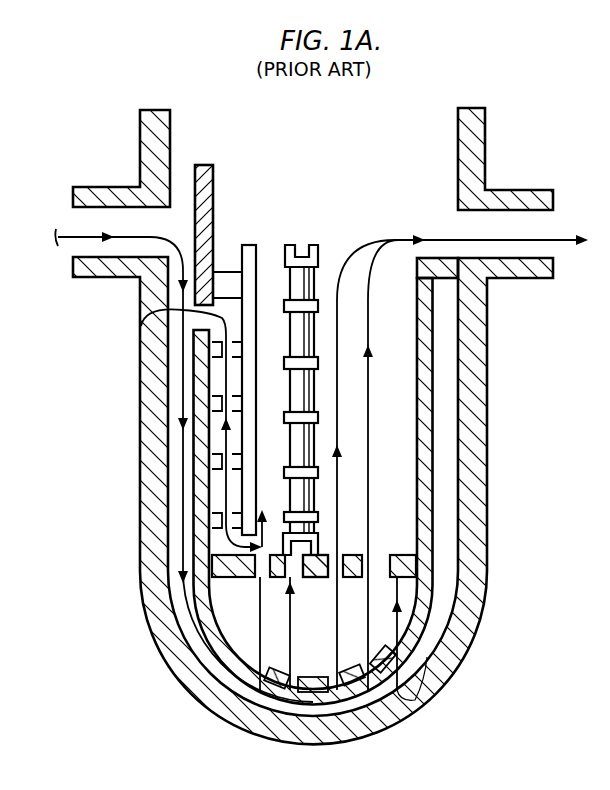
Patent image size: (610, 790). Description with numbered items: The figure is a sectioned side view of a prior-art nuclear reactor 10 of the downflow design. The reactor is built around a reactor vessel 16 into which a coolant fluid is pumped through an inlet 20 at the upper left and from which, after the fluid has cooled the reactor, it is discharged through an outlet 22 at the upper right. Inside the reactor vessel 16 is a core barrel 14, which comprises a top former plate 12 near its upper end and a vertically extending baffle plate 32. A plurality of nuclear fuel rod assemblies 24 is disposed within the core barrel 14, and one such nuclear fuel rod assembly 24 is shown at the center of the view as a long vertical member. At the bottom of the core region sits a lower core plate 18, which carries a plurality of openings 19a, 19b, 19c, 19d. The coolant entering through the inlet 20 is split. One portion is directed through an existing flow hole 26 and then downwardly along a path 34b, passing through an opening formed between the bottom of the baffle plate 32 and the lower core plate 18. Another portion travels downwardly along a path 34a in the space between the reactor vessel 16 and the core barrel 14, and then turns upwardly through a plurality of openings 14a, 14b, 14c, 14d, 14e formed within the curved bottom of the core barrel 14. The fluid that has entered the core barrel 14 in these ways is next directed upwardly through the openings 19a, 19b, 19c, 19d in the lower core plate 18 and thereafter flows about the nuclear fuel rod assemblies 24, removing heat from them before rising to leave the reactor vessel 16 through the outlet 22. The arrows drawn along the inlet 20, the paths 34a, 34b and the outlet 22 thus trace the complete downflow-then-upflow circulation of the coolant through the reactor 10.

The nuclear reactor 10 is at (126, 138).
The top former plate 12 is at (228, 283).
The core barrel 14 is at (213, 190).
The opening 14a is at (265, 670).
The opening 14b is at (298, 680).
The opening 14c is at (344, 674).
The opening 14d is at (376, 660).
The opening 14e is at (427, 657).
The reactor vessel 16 is at (478, 385).
The lower core plate 18 is at (401, 555).
The opening 19a is at (268, 578).
The opening 19b is at (303, 578).
The opening 19c is at (329, 578).
The opening 19d is at (362, 578).
The inlet 20 is at (72, 250).
The outlet 22 is at (540, 210).
The nuclear fuel rod assembly 24 is at (322, 276).
The flow hole 26 is at (190, 430).
The baffle plate 32 is at (253, 298).
The path 34a is at (175, 562).
The path 34b is at (217, 450).